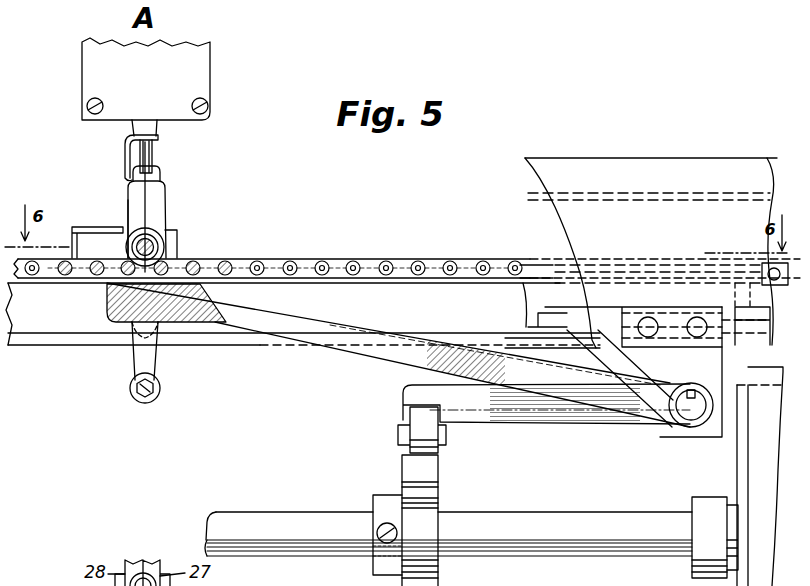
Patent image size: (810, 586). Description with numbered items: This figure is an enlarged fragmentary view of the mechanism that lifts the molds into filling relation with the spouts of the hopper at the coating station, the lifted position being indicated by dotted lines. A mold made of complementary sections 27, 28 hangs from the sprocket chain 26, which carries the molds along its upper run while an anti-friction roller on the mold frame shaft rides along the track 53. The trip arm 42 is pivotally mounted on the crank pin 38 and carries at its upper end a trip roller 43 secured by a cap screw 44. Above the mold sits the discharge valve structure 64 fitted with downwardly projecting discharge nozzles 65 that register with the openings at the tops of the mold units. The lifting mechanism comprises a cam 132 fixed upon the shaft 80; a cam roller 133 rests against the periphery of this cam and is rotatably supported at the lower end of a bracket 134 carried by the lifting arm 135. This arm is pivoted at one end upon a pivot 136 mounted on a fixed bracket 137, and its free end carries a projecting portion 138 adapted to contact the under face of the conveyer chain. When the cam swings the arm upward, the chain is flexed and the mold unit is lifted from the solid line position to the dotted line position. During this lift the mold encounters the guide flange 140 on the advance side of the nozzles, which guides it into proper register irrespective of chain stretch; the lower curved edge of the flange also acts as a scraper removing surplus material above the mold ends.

The sprocket chain 26 is at (345, 258).
The mold section 27 is at (160, 197).
The mold section 28 is at (133, 194).
The crank pin 38 is at (130, 336).
The trip arm 42 is at (162, 360).
The trip roller 43 is at (152, 405).
The cap screw 44 is at (160, 396).
The track 53 is at (48, 326).
The discharge valve structure 64 is at (195, 72).
The discharge nozzle 65 is at (152, 156).
The longitudinally extending shaft 80 is at (596, 526).
The cam 132 is at (430, 512).
The cam roller 133 is at (407, 455).
The bracket 134 is at (475, 413).
The lifting arm 135 is at (372, 350).
The pivot 136 is at (694, 412).
The fixed bracket 137 is at (690, 433).
The projecting portion 138 is at (107, 300).
The guide flange 140 is at (125, 172).